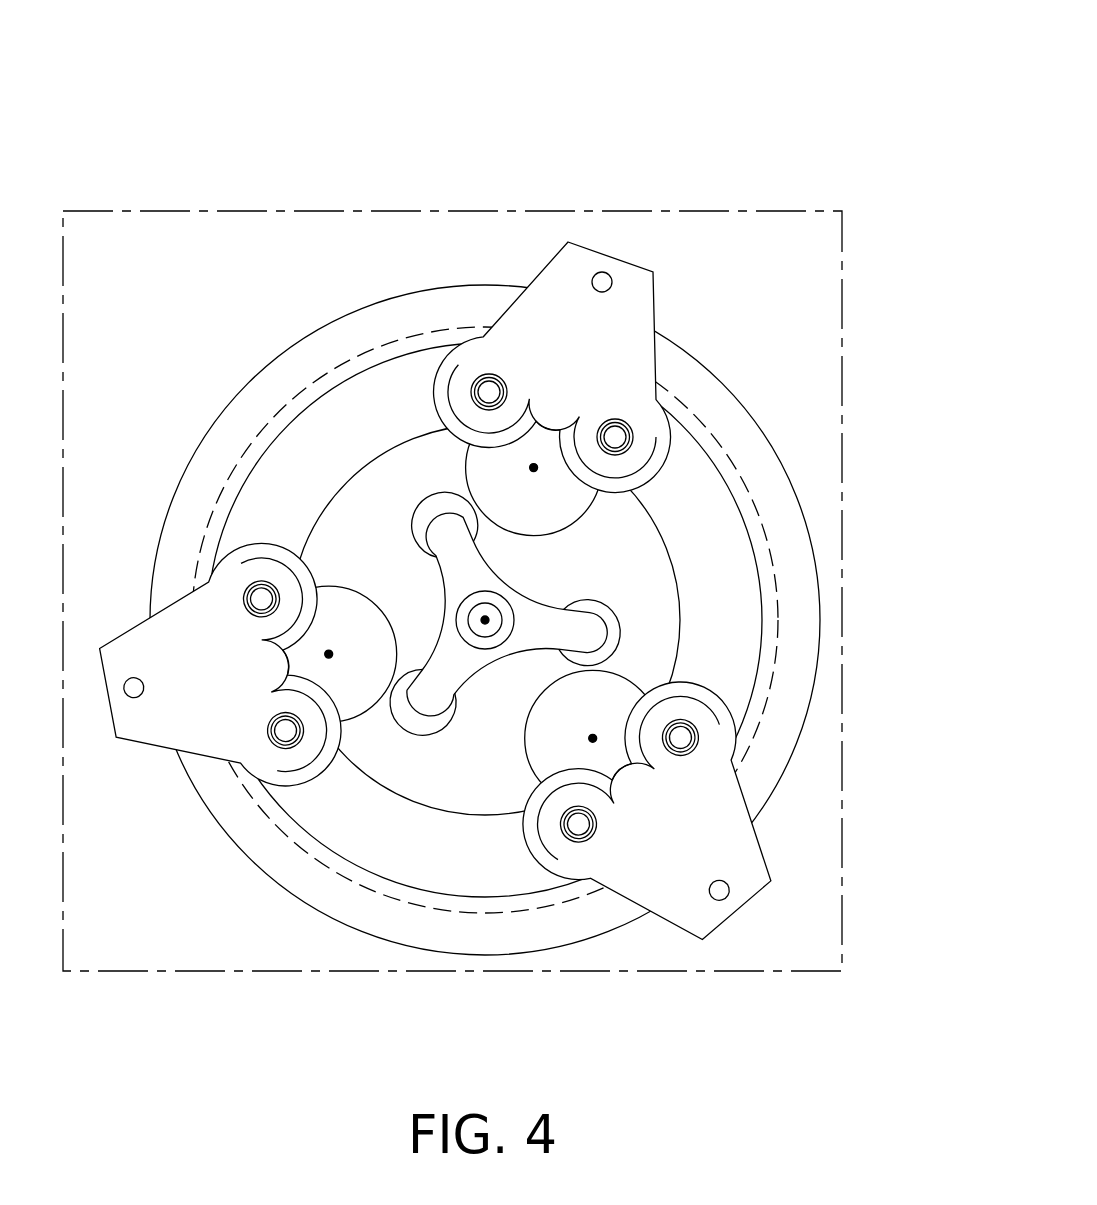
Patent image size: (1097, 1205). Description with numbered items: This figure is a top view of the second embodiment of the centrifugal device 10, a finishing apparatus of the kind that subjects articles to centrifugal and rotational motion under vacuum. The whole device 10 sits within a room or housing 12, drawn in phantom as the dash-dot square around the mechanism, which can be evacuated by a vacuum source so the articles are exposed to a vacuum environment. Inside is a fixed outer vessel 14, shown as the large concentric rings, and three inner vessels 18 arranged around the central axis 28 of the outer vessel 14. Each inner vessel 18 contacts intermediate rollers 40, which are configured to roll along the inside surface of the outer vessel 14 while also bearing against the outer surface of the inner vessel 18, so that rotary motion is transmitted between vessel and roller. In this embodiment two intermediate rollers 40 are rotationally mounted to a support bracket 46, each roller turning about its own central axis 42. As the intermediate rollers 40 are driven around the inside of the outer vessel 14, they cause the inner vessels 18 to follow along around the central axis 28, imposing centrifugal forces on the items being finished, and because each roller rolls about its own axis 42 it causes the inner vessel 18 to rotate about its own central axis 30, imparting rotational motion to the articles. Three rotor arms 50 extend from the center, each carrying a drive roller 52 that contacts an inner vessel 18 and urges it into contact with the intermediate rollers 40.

The centrifugal device 10 is at (664, 136).
The housing 12 is at (843, 849).
The outer vessel 14 is at (733, 425).
The inner vessel 18 is at (362, 588).
The central axis 28 is at (490, 615).
The central axis 30 is at (328, 652).
The intermediate roller 40 is at (694, 689).
The central axis 42 is at (282, 733).
The support bracket 46 is at (163, 717).
The rotor arm 50 is at (441, 569).
The drive roller 52 is at (603, 606).